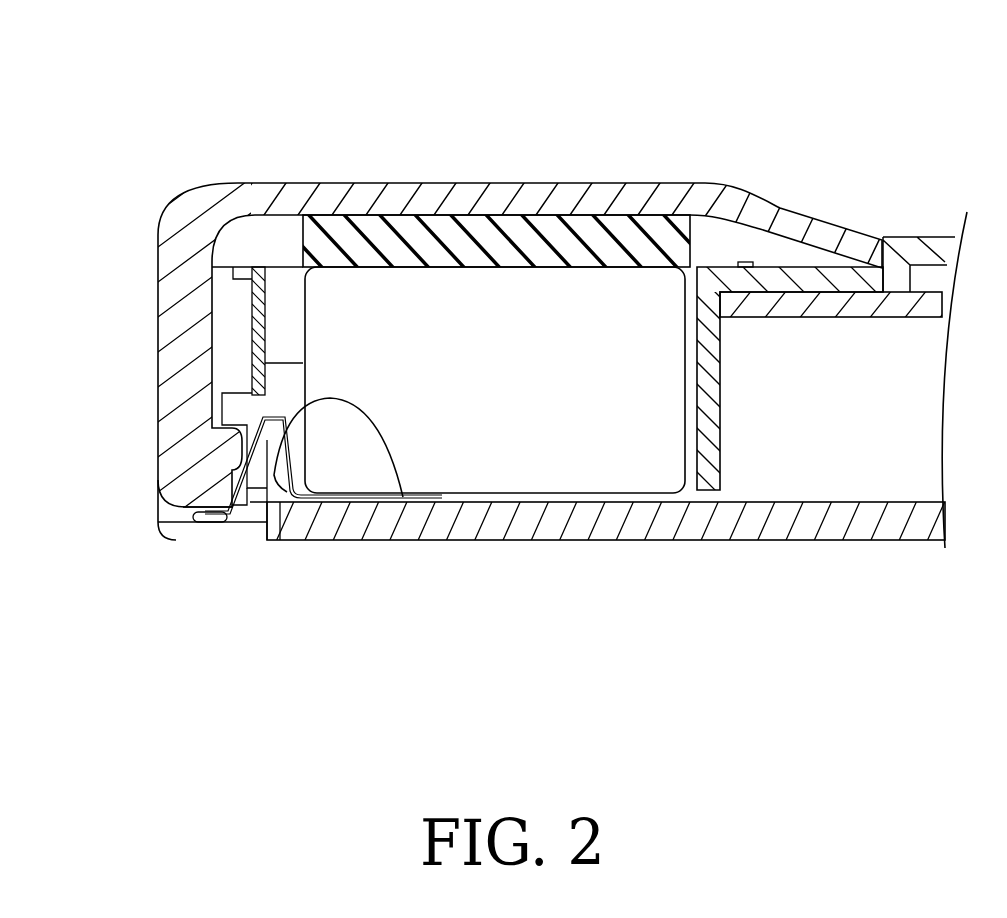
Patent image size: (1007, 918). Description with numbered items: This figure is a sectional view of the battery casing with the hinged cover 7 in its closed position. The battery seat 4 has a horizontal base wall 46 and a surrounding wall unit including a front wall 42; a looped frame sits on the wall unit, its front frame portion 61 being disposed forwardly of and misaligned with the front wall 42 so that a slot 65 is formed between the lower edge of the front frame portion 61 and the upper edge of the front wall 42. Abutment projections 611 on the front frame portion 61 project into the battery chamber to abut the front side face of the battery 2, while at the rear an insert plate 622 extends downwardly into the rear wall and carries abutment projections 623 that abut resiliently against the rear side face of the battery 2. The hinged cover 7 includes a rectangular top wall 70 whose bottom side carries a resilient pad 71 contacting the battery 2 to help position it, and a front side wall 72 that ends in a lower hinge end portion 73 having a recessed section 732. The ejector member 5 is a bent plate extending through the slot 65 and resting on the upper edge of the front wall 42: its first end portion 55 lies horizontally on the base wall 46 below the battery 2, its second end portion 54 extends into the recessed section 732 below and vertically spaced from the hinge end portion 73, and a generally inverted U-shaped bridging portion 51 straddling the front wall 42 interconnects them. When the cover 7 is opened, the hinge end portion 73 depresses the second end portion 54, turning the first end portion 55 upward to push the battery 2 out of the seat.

The battery 2 is at (425, 307).
The battery seat 4 is at (610, 562).
The horizontal base wall 46 is at (492, 526).
The ejector member 5 is at (336, 524).
The front wall 42 is at (283, 520).
The bridging portion 51 is at (412, 508).
The second end portion 54 is at (218, 540).
The first end portion 55 is at (376, 500).
The front frame portion 61 is at (257, 292).
The abutment projections 611 is at (285, 328).
The insert plate 622 is at (712, 392).
The abutment projections 623 is at (688, 437).
The slot 65 is at (275, 330).
The hinged cover 7 is at (521, 278).
The top wall 70 is at (643, 200).
The resilient pad 71 is at (468, 250).
The front side wall 72 is at (172, 367).
The hinge end portion 73 is at (154, 480).
The recessed section 732 is at (177, 538).